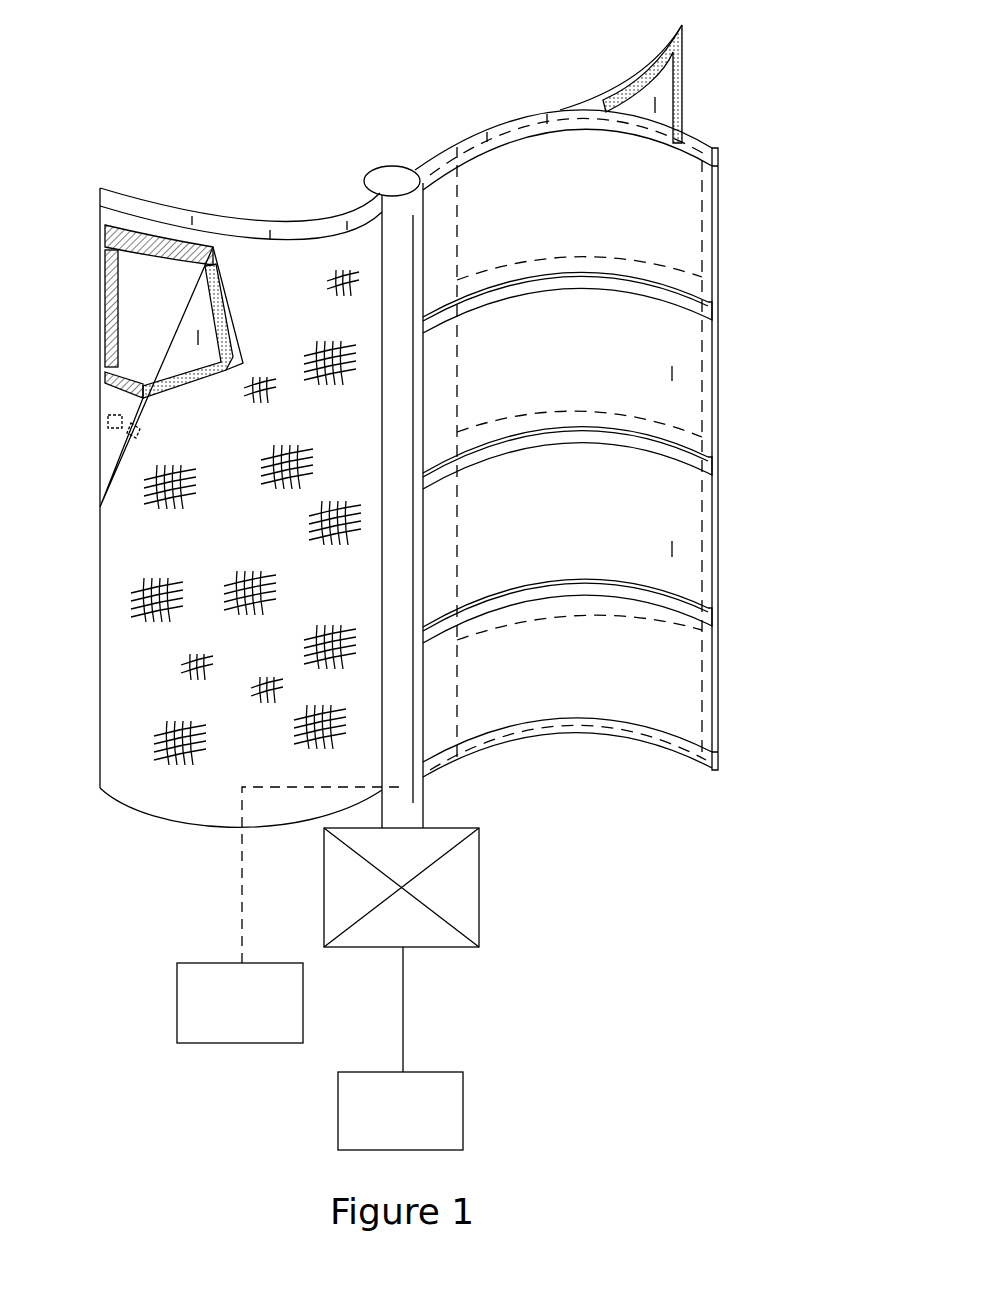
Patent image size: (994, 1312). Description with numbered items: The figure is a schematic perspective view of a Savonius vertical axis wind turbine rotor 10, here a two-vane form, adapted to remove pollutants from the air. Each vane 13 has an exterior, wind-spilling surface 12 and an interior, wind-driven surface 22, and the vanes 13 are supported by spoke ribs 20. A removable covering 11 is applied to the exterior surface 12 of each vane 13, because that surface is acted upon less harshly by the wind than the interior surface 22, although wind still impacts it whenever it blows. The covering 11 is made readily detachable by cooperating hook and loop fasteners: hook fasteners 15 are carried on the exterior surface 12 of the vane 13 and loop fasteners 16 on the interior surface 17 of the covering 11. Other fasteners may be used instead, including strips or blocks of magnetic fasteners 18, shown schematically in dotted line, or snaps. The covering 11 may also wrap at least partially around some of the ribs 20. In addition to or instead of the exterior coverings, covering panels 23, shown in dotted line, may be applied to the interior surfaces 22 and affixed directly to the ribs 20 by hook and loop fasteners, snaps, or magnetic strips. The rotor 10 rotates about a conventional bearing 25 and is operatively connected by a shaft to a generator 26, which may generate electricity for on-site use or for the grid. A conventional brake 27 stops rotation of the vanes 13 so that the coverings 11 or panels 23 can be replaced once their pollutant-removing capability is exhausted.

The Savonius vertical axis wind turbine rotor 10 is at (104, 144).
The removable covering 11 is at (682, 38).
The exterior surface 12 is at (137, 320).
The vane 13 is at (76, 672).
The hook fastener 15 is at (165, 265).
The loop fastener 16 is at (213, 292).
The interior surface of covering 17 is at (198, 337).
The magnetic fastener 18 is at (108, 426).
The spoke rib 20 is at (648, 293).
The interior surface 22 is at (507, 696).
The covering panel 23 is at (672, 374).
The bearing 25 is at (470, 893).
The generator 26 is at (460, 1082).
The brake 27 is at (177, 1008).